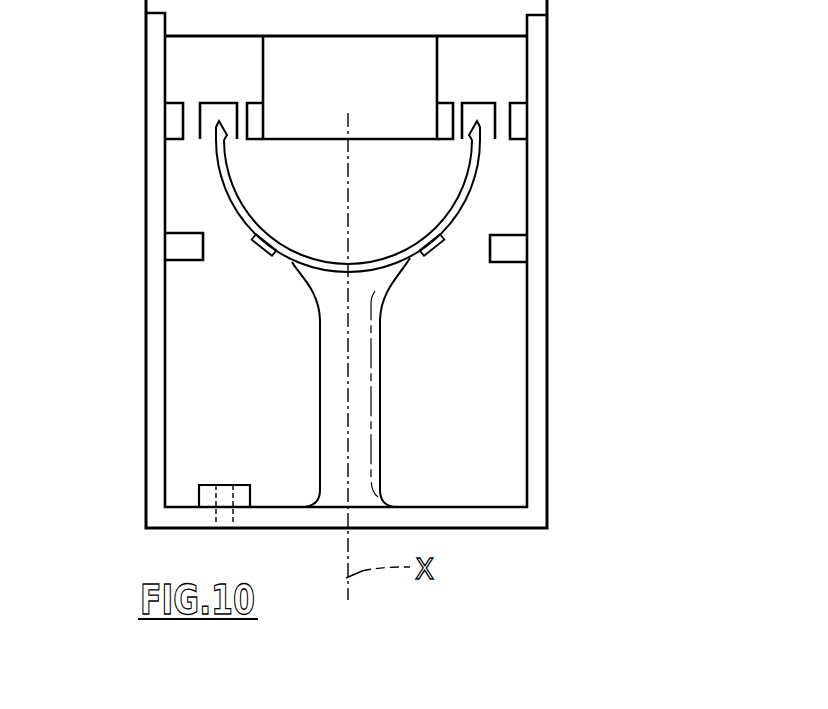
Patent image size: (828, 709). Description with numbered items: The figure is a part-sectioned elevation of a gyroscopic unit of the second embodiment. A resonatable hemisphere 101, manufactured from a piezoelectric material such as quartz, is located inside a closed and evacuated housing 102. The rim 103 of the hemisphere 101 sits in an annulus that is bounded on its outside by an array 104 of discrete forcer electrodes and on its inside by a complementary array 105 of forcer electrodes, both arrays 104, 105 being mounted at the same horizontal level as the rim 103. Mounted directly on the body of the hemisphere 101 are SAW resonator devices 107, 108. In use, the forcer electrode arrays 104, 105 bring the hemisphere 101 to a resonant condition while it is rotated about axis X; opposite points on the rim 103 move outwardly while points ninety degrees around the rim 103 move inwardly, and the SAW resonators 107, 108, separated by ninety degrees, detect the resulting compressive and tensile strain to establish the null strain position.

The resonatable hemisphere 101 is at (404, 314).
The housing 102 is at (548, 468).
The rim 103 is at (478, 157).
The array of discrete forcer electrodes 104 is at (176, 140).
The complementary array of forcer electrodes 105 is at (442, 108).
The SAW resonator device 107 is at (262, 258).
The SAW resonator device 108 is at (430, 258).